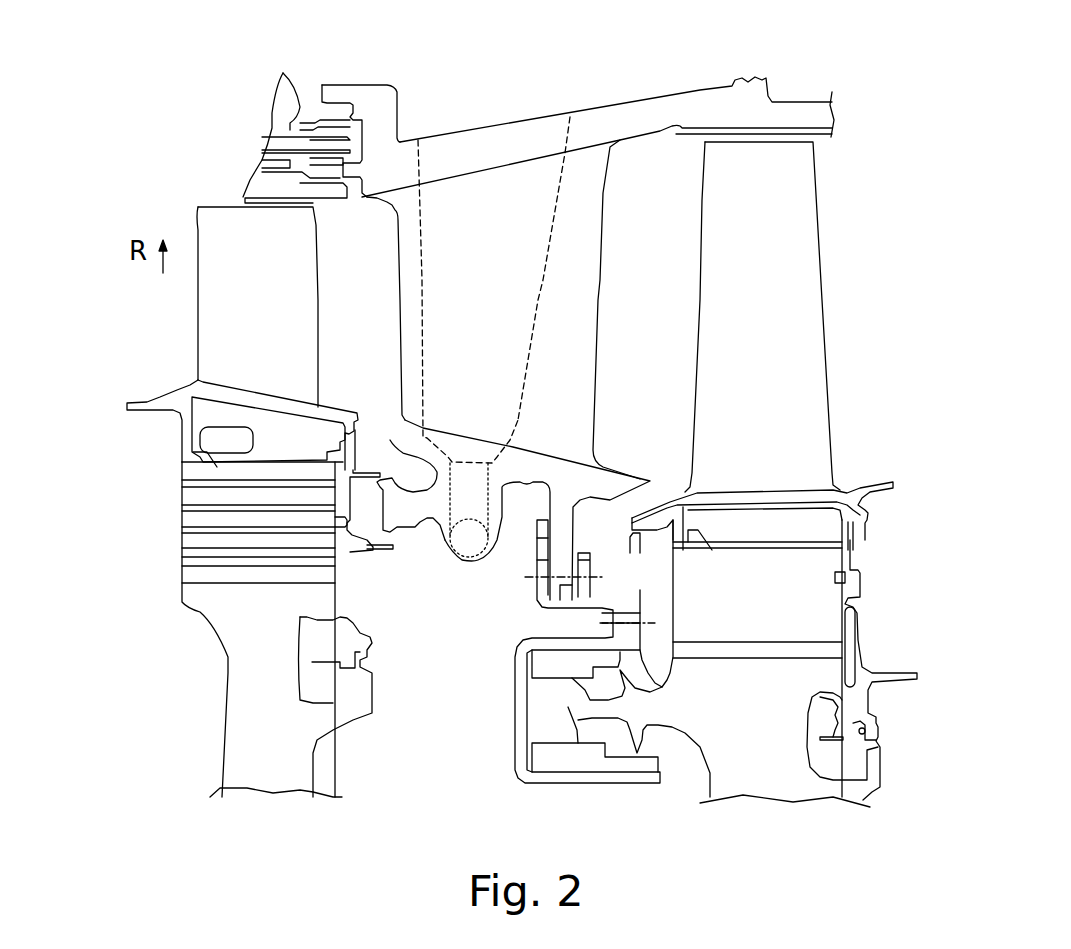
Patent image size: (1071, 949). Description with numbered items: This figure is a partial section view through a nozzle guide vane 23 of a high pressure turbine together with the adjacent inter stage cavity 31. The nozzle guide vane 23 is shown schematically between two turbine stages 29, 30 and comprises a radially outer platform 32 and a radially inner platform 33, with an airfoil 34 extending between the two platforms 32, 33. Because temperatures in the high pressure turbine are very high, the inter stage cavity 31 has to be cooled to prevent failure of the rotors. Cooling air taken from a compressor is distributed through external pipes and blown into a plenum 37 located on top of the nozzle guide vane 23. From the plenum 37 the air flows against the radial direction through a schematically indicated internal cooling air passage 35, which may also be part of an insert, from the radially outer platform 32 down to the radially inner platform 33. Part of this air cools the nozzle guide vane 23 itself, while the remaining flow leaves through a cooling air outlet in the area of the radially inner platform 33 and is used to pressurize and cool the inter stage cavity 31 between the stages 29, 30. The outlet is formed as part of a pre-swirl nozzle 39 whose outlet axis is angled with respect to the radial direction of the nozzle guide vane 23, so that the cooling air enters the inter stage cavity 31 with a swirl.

The nozzle guide vane 23 is at (608, 188).
The stage 29 is at (215, 208).
The stage 30 is at (822, 250).
The inter stage cavity 31 is at (454, 632).
The radially outer platform 32 is at (407, 158).
The radially inner platform 33 is at (610, 480).
The airfoil 34 is at (568, 182).
The internal cooling air passage 35 is at (492, 202).
The plenum 37 is at (456, 127).
The pre-swirl nozzle 39 is at (462, 542).